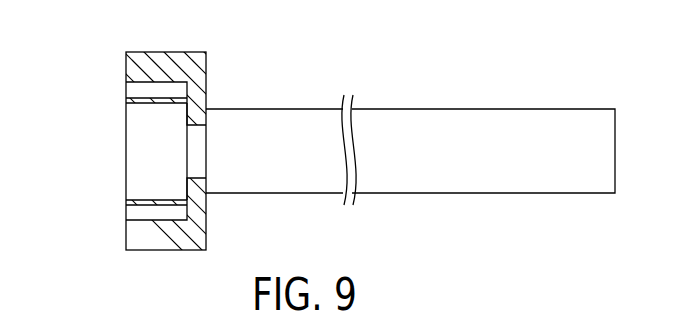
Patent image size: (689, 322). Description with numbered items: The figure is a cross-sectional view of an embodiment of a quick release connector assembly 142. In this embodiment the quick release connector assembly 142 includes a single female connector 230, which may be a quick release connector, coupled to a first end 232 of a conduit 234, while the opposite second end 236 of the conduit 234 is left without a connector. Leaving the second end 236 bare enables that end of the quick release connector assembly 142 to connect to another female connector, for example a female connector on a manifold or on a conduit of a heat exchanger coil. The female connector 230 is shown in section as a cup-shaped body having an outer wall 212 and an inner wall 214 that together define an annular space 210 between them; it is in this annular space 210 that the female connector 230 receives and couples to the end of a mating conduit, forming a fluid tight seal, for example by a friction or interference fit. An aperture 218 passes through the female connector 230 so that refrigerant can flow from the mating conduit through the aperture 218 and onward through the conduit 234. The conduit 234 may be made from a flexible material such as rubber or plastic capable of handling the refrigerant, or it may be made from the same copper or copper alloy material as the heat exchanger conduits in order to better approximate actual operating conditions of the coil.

The quick release connector assembly 142 is at (497, 46).
The annular space 210 is at (146, 211).
The outer wall 212 is at (135, 240).
The inner wall 214 is at (160, 201).
The aperture 218 is at (183, 154).
The female connector 230 is at (220, 90).
The first end 232 is at (217, 208).
The conduit 234 is at (434, 109).
The second end 236 is at (522, 95).